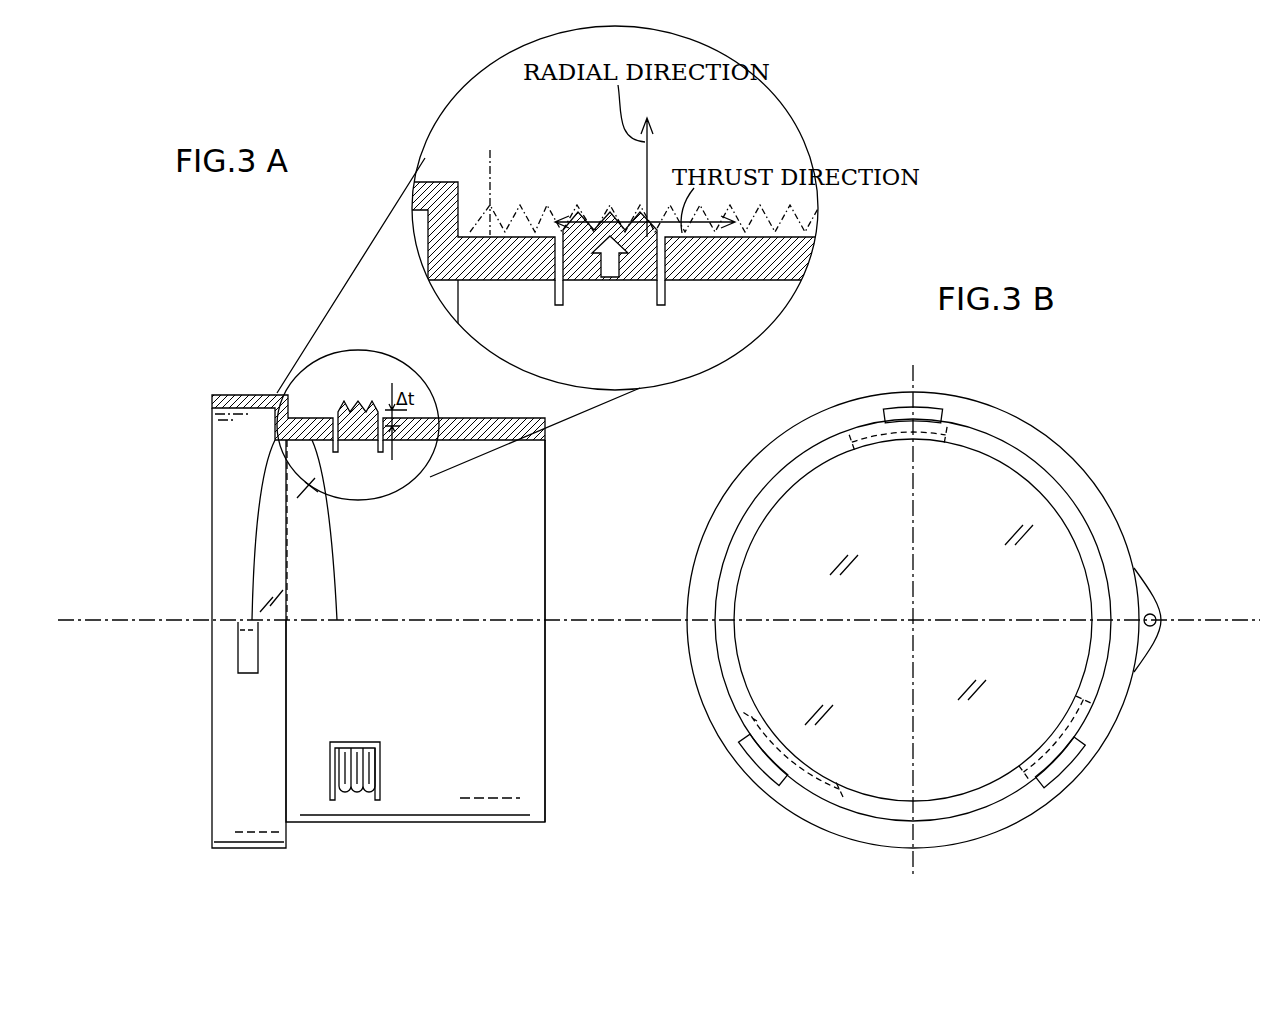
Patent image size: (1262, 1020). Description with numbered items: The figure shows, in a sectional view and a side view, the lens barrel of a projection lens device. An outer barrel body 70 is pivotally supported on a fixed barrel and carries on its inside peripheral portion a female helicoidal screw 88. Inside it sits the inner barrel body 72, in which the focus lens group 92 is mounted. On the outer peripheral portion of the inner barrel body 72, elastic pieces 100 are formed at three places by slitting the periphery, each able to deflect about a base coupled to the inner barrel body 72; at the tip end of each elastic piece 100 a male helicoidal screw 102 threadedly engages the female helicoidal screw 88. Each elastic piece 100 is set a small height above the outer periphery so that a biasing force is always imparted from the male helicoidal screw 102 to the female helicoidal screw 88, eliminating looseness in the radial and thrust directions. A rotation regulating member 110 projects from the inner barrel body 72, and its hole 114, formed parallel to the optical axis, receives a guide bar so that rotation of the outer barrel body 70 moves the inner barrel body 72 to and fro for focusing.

In FIG. 3A, the outer barrel body 70 is at (497, 222).
In FIG. 3A, the female helicoidal screw 88 is at (541, 222).
In FIG. 3A, the inner barrel body 72 is at (573, 522).
In FIG. 3B, the inner barrel body 72 is at (1091, 417).
In FIG. 3A, the focus lens group 92 is at (265, 545).
In FIG. 3B, the focus lens group 92 is at (1073, 577).
In FIG. 3A, the elastic piece 100 is at (608, 292).
In FIG. 3B, the elastic piece 100 is at (880, 440).
In FIG. 3A, the male helicoidal screw 102 is at (578, 244).
In FIG. 3B, the male helicoidal screw 102 is at (933, 414).
In FIG. 3A, the rotation regulating member 110 is at (237, 663).
In FIG. 3B, the rotation regulating member 110 is at (1152, 640).
In FIG. 3A, the hole 114 is at (237, 626).
In FIG. 3B, the hole 114 is at (1156, 613).